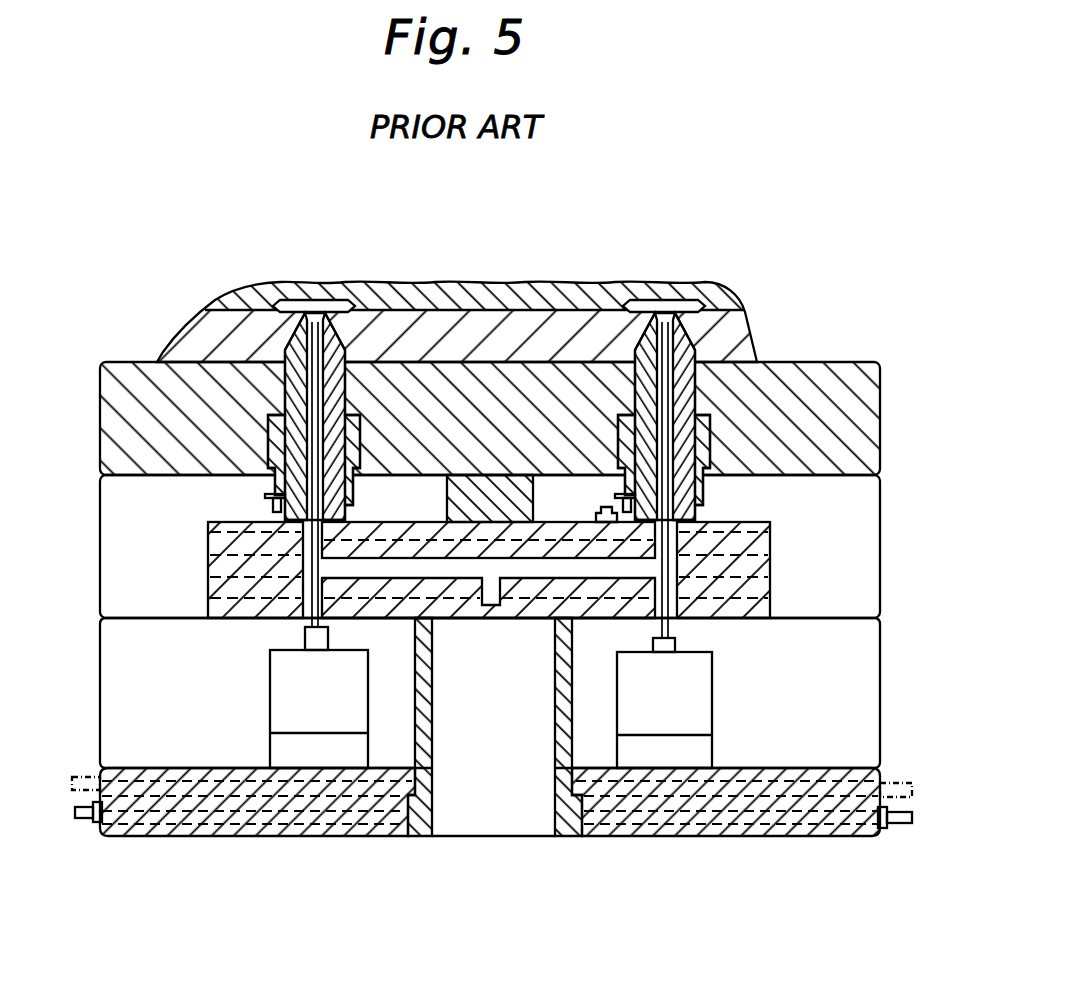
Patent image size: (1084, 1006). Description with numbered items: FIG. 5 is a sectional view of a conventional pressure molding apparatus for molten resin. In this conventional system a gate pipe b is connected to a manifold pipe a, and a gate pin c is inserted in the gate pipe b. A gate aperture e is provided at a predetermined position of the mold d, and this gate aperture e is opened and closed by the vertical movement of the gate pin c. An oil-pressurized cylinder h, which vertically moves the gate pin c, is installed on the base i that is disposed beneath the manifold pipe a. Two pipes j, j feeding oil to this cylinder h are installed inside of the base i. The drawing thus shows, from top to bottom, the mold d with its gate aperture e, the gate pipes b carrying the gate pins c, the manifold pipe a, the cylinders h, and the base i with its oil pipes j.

The manifold pipe a is at (413, 533).
The gate pipe b is at (283, 481).
The gate pin c is at (315, 546).
The mold d is at (481, 325).
The gate aperture e is at (319, 300).
The oil-pressurized cylinder h is at (358, 697).
The base i is at (232, 768).
The pipes j is at (146, 776).